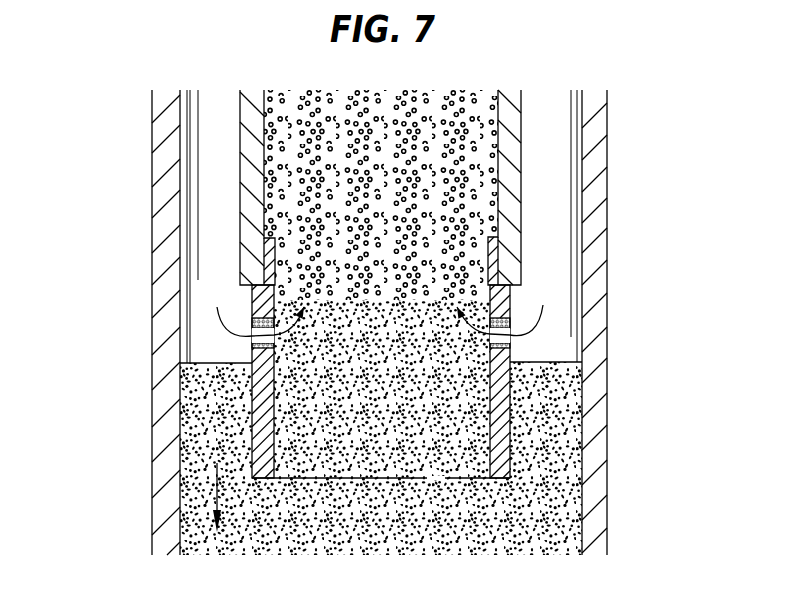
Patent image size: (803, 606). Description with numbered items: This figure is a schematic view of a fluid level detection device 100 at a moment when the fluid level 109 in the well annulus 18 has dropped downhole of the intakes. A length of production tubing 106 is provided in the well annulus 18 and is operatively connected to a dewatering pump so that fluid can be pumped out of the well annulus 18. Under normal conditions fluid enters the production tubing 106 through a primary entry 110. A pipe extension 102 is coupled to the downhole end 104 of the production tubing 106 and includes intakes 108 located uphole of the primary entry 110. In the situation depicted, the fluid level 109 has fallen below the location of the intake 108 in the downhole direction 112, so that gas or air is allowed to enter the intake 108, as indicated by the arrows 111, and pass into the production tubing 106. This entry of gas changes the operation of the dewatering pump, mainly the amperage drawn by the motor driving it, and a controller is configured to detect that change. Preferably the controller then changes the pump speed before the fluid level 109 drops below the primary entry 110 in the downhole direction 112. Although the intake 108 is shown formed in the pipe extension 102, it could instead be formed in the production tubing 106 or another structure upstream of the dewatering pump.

The fluid level detection device 100 is at (547, 137).
The pipe extension 102 is at (252, 403).
The downhole end 104 is at (521, 245).
The production tubing 106 is at (240, 143).
The intake 108 is at (234, 344).
The fluid level 109 is at (560, 362).
The primary entry 110 is at (439, 483).
The arrows 111 is at (540, 318).
The downhole direction 112 is at (217, 492).
The well annulus 18 is at (557, 423).